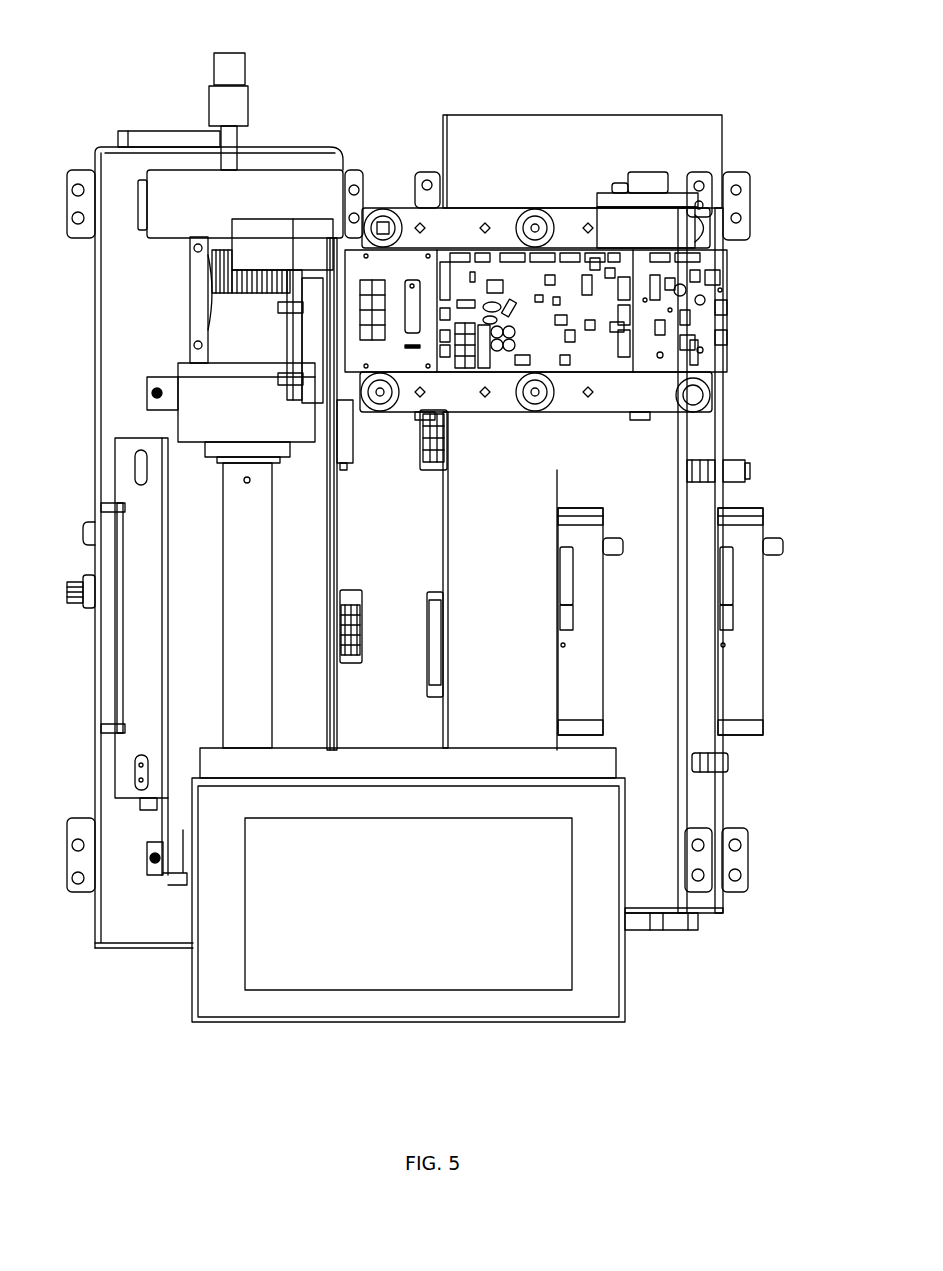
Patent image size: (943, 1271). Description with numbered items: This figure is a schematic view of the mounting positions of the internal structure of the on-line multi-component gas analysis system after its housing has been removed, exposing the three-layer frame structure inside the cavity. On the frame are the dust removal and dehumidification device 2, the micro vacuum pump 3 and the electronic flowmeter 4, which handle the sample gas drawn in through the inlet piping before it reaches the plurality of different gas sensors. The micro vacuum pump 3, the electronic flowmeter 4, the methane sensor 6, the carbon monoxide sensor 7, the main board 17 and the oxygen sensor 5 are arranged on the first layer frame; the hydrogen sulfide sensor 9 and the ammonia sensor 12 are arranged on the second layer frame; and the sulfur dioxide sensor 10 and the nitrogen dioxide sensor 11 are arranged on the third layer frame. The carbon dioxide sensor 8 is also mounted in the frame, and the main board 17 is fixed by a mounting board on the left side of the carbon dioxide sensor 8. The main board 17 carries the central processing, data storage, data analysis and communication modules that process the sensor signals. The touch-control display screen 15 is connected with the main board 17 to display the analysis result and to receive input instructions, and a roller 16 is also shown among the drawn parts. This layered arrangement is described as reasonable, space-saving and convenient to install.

The dust removal and dehumidification device 2 is at (243, 53).
The micro vacuum pump 3 is at (293, 240).
The electronic flowmeter 4 is at (293, 402).
The oxygen sensor 5 is at (85, 528).
The methane sensor 6 is at (780, 540).
The carbon monoxide sensor 7 is at (733, 285).
The carbon dioxide sensor 8 is at (620, 540).
The hydrogen sulfide sensor 9 is at (177, 377).
The sulfur dioxide sensor 10 is at (685, 782).
The nitrogen dioxide sensor 11 is at (95, 312).
The ammonia sensor 12 is at (532, 113).
The touch-control display screen 15 is at (293, 168).
The roller 16 is at (453, 955).
The main board 17 is at (95, 505).